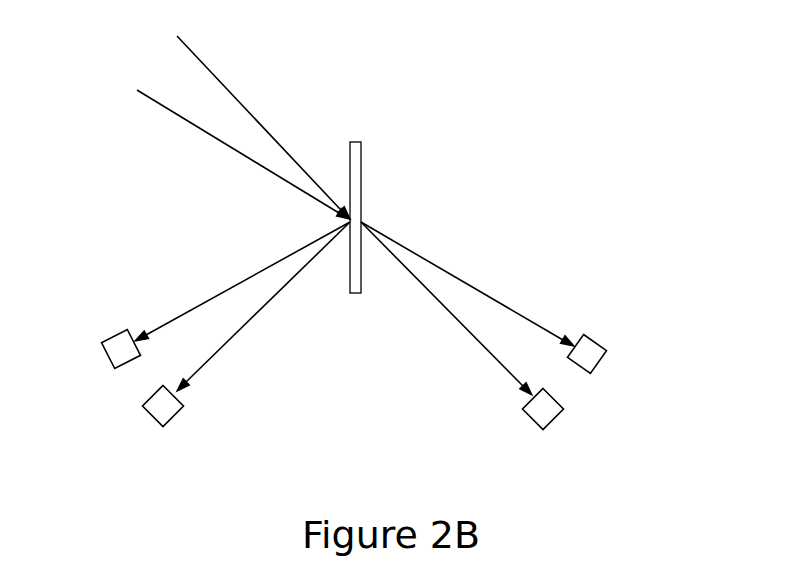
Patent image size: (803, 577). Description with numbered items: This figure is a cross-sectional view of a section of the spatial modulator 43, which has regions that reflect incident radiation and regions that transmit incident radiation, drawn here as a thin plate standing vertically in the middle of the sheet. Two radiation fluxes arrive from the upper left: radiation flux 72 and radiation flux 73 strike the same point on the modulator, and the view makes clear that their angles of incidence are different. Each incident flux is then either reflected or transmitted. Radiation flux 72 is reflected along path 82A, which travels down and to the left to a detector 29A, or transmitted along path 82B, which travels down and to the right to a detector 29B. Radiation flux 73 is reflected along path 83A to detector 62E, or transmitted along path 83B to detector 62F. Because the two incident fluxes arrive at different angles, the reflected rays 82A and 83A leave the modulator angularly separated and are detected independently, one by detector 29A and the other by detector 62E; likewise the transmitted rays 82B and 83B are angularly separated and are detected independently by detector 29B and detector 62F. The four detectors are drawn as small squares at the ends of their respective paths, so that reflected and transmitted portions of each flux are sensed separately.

The spatial modulator 43 is at (360, 148).
The radiation flux 72 is at (248, 118).
The radiation flux 73 is at (226, 146).
The reflected path 82A is at (230, 282).
The reflected path 83A is at (233, 335).
The transmitted path 82B is at (465, 282).
The transmitted path 83B is at (465, 338).
The detector 29A is at (100, 348).
The detector 29B is at (604, 347).
The detector 62E is at (148, 417).
The detector 62F is at (550, 413).